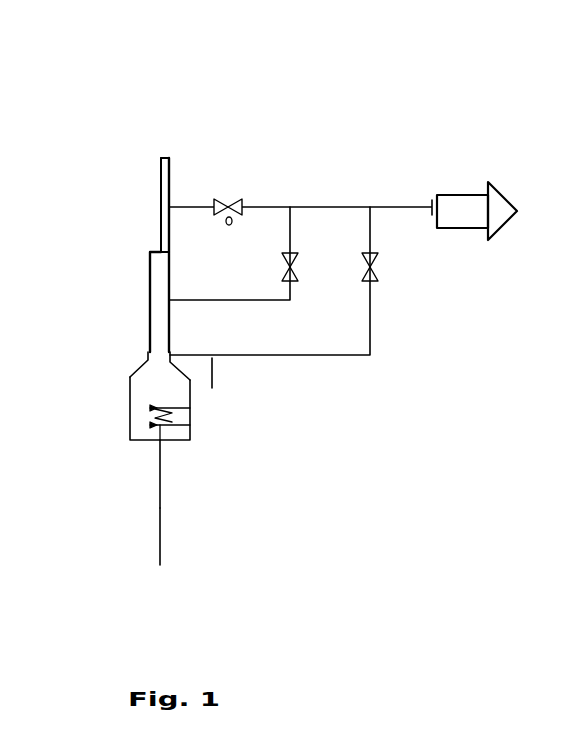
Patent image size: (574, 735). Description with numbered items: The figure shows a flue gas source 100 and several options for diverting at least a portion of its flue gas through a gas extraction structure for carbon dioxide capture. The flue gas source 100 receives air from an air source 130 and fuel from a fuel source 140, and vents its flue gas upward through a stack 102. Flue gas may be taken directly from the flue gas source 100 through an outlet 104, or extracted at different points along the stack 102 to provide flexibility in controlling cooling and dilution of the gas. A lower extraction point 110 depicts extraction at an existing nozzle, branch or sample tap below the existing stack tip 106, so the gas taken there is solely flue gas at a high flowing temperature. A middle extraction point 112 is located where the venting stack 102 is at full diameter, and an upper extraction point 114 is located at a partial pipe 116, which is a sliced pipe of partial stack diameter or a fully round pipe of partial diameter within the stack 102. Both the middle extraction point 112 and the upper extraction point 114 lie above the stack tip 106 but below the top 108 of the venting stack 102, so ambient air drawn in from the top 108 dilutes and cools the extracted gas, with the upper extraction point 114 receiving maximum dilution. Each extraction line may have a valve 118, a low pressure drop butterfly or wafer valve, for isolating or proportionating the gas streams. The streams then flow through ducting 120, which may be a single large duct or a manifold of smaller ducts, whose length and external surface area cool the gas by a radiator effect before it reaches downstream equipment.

The flue gas source 100 is at (122, 296).
The stack 102 is at (126, 245).
The outlet 104 is at (202, 393).
The stack tip 106 is at (147, 348).
The top of venting stack 108 is at (167, 156).
The lower extraction point 110 is at (177, 350).
The middle extraction point 112 is at (183, 297).
The upper extraction point 114 is at (181, 200).
The partial pipe 116 is at (153, 185).
The valve 118 is at (232, 194).
The ducting 120 is at (408, 196).
The air source 130 is at (160, 508).
The fuel source 140 is at (160, 565).